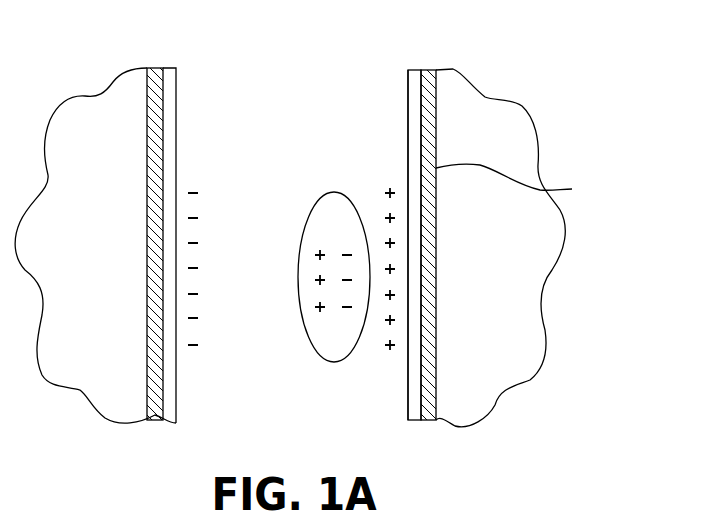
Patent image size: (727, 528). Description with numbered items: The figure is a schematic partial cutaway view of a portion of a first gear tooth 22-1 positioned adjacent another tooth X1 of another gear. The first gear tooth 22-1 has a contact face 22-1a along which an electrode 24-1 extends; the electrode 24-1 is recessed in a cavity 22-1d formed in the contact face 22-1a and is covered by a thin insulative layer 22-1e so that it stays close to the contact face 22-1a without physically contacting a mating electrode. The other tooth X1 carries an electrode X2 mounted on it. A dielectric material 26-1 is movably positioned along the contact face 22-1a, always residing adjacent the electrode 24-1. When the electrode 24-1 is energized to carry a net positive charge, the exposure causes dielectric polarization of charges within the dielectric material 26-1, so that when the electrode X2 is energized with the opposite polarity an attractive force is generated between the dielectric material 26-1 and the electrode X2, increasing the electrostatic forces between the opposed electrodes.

The other tooth X1 is at (93, 120).
The electrode X2 is at (148, 70).
The first gear tooth 22-1 is at (488, 120).
The contact face 22-1a is at (408, 130).
The cavity 22-1d is at (436, 298).
The insulative layer 22-1e is at (408, 360).
The electrode 24-1 is at (525, 181).
The dielectric material 26-1 is at (333, 342).